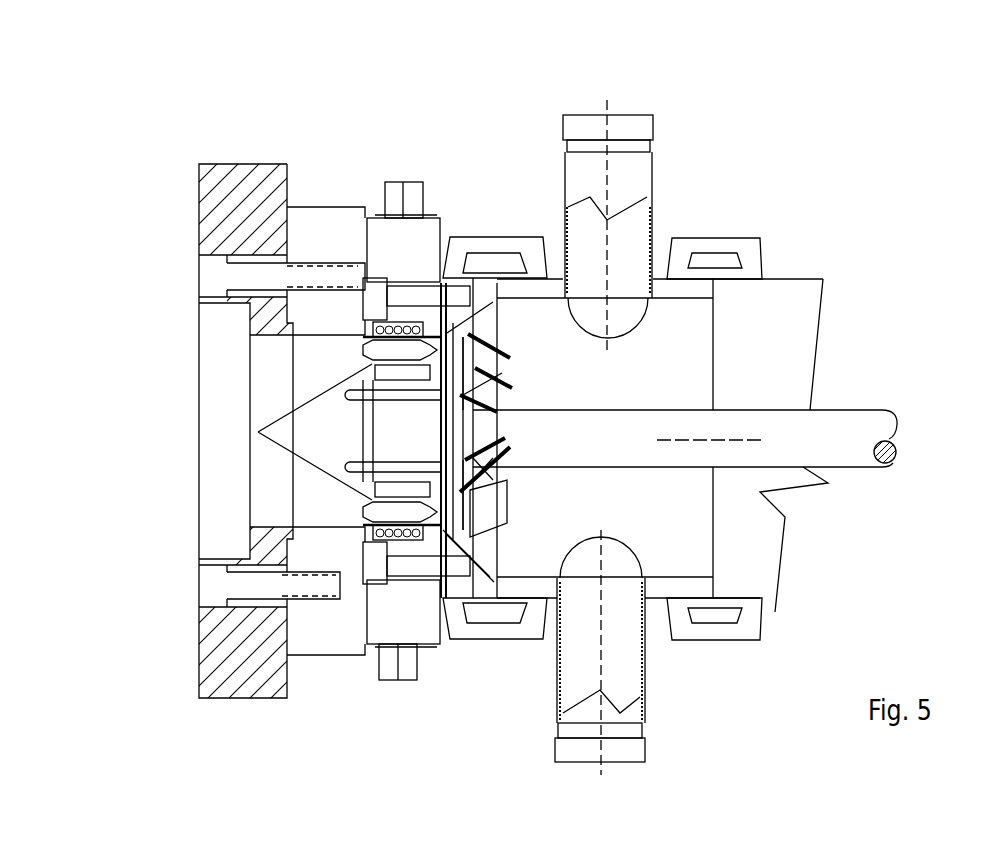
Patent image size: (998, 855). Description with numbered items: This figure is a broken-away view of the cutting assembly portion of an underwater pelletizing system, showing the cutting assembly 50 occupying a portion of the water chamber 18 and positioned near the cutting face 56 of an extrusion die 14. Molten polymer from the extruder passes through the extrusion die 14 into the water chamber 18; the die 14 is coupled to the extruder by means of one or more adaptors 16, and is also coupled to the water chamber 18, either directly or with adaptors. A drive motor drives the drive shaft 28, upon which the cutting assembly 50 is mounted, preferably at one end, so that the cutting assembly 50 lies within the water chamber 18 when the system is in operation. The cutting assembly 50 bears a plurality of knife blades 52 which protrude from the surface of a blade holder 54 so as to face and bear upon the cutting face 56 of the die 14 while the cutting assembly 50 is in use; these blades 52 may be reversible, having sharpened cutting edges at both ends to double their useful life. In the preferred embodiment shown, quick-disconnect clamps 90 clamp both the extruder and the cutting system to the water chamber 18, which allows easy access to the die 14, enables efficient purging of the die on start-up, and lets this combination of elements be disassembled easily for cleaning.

The extrusion die 14 is at (408, 745).
The adaptor 16 is at (192, 767).
The water chamber 18 is at (680, 757).
The drive shaft 28 is at (849, 410).
The cutting assembly 50 is at (510, 363).
The knife blade 52 is at (468, 250).
The blade holder 54 is at (485, 502).
The cutting face 56 is at (483, 640).
The quick-disconnect clamp 90 is at (710, 643).